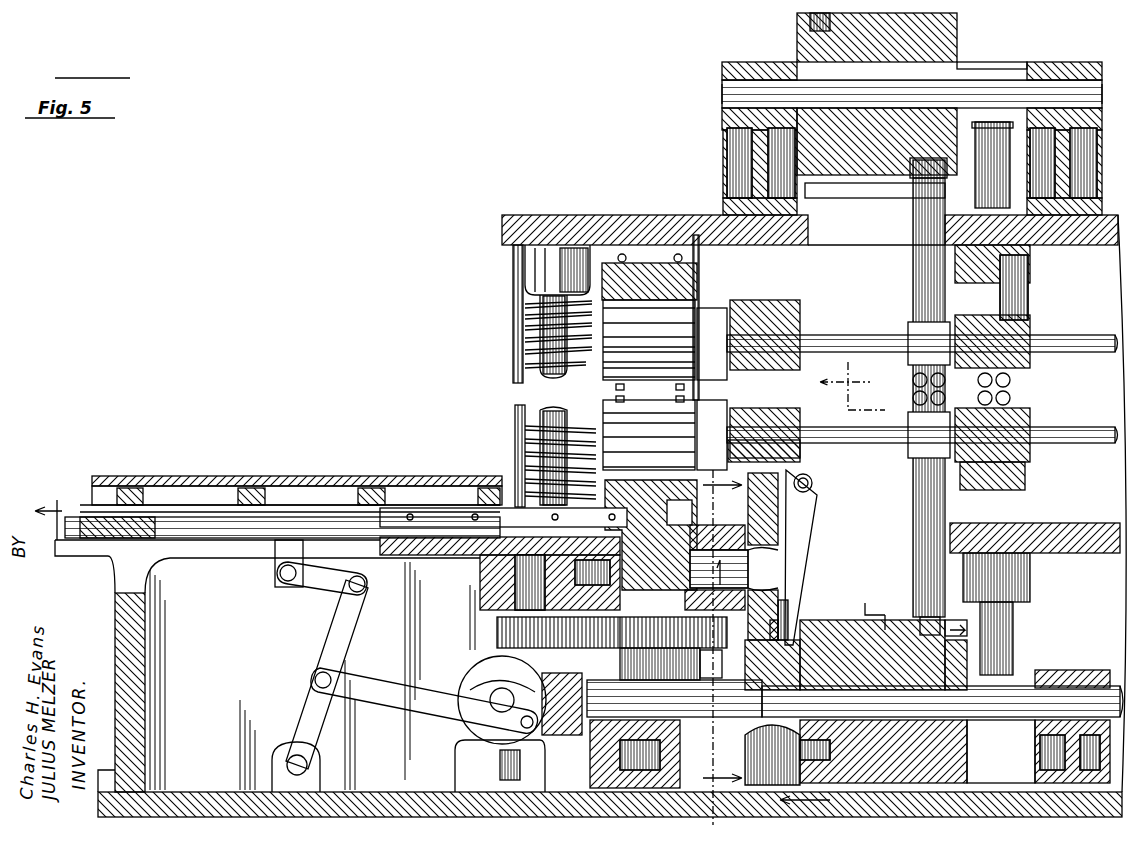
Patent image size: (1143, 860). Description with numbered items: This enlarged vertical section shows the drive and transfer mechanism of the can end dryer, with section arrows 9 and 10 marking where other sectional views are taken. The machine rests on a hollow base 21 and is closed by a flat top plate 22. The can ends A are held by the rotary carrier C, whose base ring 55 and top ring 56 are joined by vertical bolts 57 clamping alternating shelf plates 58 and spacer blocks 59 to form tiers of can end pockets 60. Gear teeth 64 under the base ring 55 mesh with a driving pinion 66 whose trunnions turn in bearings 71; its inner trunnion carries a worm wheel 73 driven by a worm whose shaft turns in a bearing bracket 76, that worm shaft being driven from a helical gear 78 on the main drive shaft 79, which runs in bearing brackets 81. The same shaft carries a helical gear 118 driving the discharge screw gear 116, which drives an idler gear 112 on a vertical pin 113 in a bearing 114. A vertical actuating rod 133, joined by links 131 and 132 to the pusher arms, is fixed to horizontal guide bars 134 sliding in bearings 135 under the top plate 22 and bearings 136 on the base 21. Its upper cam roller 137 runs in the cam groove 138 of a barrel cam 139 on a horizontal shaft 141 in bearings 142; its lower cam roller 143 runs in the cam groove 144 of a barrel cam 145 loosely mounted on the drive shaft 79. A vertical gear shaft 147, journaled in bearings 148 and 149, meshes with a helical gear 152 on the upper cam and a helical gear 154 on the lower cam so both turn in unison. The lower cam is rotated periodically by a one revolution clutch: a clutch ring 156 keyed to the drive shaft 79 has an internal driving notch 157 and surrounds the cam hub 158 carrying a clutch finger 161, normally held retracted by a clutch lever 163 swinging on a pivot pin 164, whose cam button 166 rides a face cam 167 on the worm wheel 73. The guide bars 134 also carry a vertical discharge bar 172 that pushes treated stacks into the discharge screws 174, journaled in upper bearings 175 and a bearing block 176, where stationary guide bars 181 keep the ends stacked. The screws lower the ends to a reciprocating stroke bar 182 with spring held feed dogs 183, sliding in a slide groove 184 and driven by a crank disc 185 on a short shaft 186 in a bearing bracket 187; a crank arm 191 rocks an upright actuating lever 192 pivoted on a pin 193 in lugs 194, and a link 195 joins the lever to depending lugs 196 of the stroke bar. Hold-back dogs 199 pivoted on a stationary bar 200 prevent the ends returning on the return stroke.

The section line 9- 9 is at (721, 647).
The section line 10- 10 is at (839, 587).
The hollow base 21 is at (128, 583).
The top plate 22 is at (680, 232).
The base ring 55 is at (651, 535).
The top ring 56 is at (640, 268).
The vertical bolts 57 is at (676, 386).
The shelf plates 58 is at (660, 310).
The spacer blocks 59 is at (660, 330).
The can end pockets 60 is at (620, 372).
The gear teeth 64 is at (733, 483).
The driving pinion 66 is at (660, 590).
The bearings 71 is at (555, 590).
The worm wheel 73 is at (772, 592).
The bearing bracket 76 is at (757, 705).
The helical gear 78 is at (772, 755).
The main drive shaft 79 is at (1112, 690).
The bearing brackets 81 is at (1068, 676).
The idler gear 112 is at (630, 665).
The vertical pin 113 is at (618, 612).
The bearing 114 is at (745, 662).
The discharge screw gear 116 is at (500, 626).
The helical gear 118 is at (565, 721).
The link 131 is at (848, 192).
The link 132 is at (876, 605).
The vertical actuating rod 133 is at (920, 262).
The guide bars 134 is at (1068, 338).
The bearings 135 is at (815, 332).
The bearings 136 is at (780, 425).
The cam roller 137 is at (920, 170).
The cam groove 138 is at (800, 24).
The barrel cam 139 is at (935, 30).
The horizontal shaft 141 is at (724, 92).
The bearings 142 is at (738, 70).
The cam roller 143 is at (960, 622).
The cam groove 144 is at (970, 630).
The barrel cam 145 is at (1000, 655).
The vertical gear shaft 147 is at (985, 142).
The bearing 148 is at (1030, 270).
The bearing 149 is at (1030, 570).
The helical gear 152 is at (1000, 66).
The helical gear 154 is at (1000, 726).
The clutch ring 156 is at (805, 640).
The driving notch 157 is at (840, 752).
The hub 158 is at (830, 726).
The clutch finger 161 is at (883, 655).
The clutch lever 163 is at (800, 543).
The pivot pin 164 is at (812, 480).
The cam button 166 is at (798, 640).
The face cam 167 is at (820, 490).
The discharge bar 172 is at (712, 386).
The discharge screws 174 is at (545, 318).
The upper bearings 175 is at (540, 265).
The bearing block 176 is at (530, 575).
The guide bars 181 is at (517, 380).
The stroke bar 182 is at (222, 520).
The feed dogs 183 is at (168, 470).
The slide groove 184 is at (62, 500).
The crank disc 185 is at (490, 680).
The short shaft 186 is at (519, 696).
The bearing bracket 187 is at (470, 760).
The crank arm 191 is at (395, 700).
The actuating lever 192 is at (310, 700).
The pivot pin 193 is at (296, 755).
The lugs 194 is at (282, 770).
The link 195 is at (322, 585).
The depending lugs 196 is at (280, 560).
The hold-back dogs 199 is at (128, 490).
The stationary bar 200 is at (340, 478).
The can ends A is at (192, 505).
The rotary carrier C is at (650, 262).